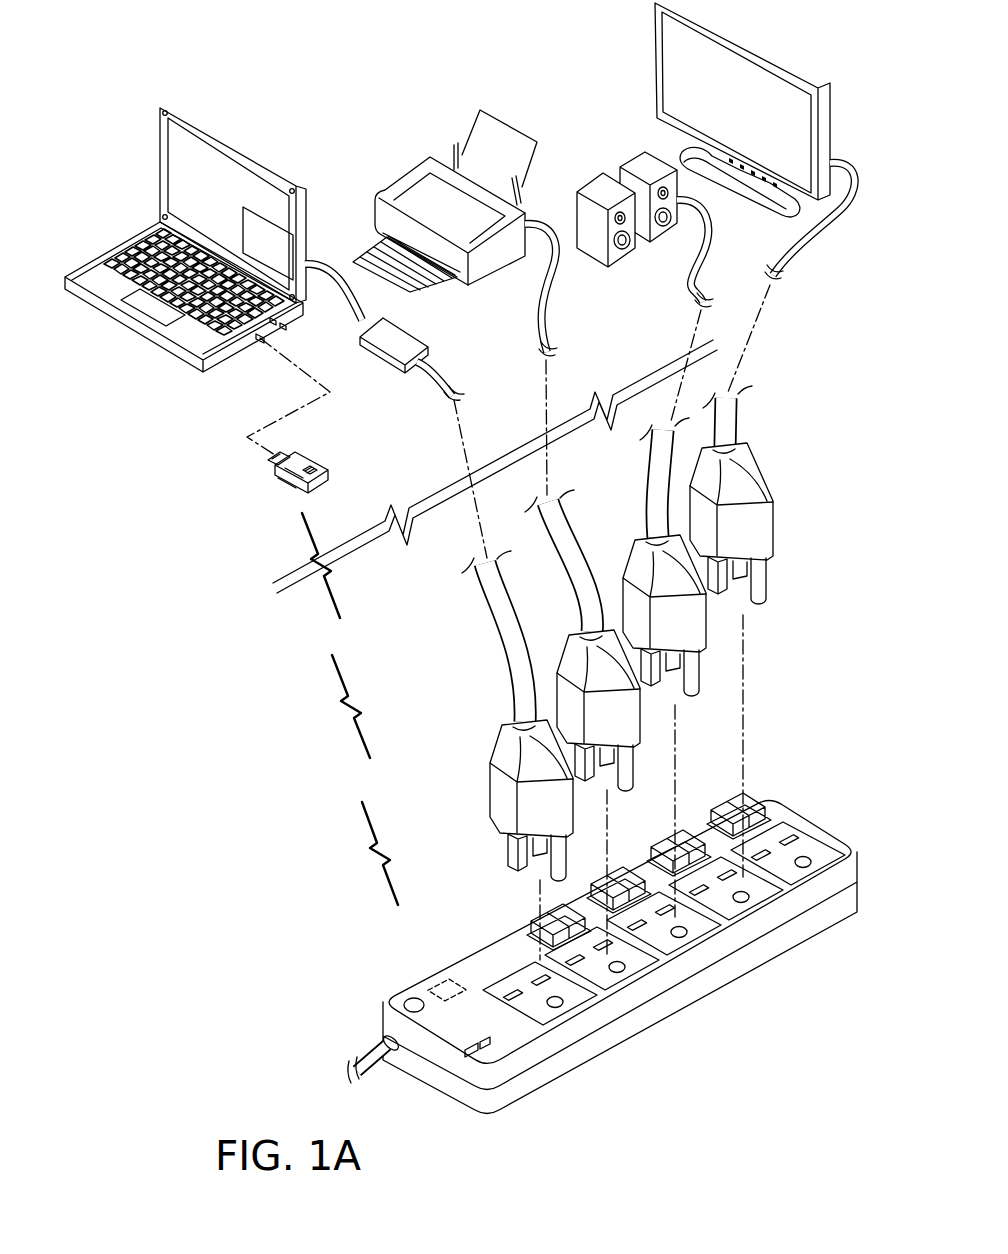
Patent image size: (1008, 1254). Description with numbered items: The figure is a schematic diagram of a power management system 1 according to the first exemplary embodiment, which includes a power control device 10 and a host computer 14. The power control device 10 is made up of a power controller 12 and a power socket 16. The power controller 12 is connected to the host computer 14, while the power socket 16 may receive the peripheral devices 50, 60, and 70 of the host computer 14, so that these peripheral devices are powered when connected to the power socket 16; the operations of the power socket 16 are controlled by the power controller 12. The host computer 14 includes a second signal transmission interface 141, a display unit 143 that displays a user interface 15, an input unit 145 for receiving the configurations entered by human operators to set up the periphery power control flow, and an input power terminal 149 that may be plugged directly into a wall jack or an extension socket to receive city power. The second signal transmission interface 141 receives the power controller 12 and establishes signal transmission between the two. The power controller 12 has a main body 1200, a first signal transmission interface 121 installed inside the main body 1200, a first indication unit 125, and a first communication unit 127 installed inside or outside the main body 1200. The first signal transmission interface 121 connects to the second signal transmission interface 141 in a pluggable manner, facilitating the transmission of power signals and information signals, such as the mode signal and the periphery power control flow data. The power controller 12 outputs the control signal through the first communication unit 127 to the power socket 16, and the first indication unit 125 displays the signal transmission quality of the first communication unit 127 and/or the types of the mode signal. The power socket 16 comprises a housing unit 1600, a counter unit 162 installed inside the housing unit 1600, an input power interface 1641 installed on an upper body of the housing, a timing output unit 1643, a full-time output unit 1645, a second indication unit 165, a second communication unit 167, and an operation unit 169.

The power management system 1 is at (129, 53).
The power control device 10 is at (388, 394).
The power controller 12 is at (294, 472).
The first signal transmission interface 121 is at (270, 457).
The main body 1200 is at (282, 477).
The first indication unit 125 is at (295, 487).
The first communication unit 127 is at (318, 464).
The host computer 14 is at (208, 273).
The second signal transmission interface 141 is at (260, 340).
The display unit 143 is at (228, 183).
The input unit 145 is at (143, 257).
The input power terminal 149 is at (495, 800).
The user interface 15 is at (277, 233).
The power socket 16 is at (579, 945).
The housing unit 1600 is at (633, 1040).
The input power interface 1641 is at (363, 1060).
The timing output unit 1643 is at (737, 910).
The full-time output unit 1645 is at (535, 1008).
The second indication unit 165 is at (465, 1050).
The second communication unit 167 is at (410, 998).
The counter unit 162 is at (447, 979).
The operation unit 169 is at (750, 810).
The peripheral device 50 is at (415, 157).
The peripheral device 60 is at (608, 164).
The peripheral device 70 is at (648, 58).